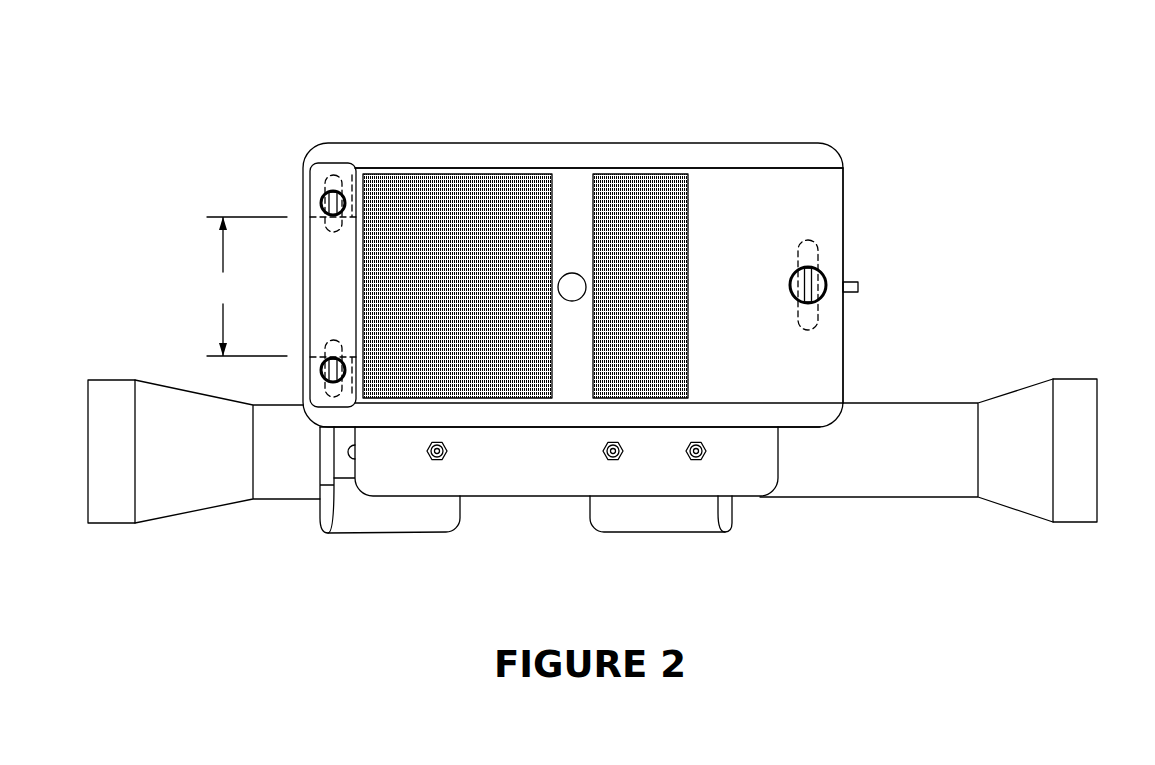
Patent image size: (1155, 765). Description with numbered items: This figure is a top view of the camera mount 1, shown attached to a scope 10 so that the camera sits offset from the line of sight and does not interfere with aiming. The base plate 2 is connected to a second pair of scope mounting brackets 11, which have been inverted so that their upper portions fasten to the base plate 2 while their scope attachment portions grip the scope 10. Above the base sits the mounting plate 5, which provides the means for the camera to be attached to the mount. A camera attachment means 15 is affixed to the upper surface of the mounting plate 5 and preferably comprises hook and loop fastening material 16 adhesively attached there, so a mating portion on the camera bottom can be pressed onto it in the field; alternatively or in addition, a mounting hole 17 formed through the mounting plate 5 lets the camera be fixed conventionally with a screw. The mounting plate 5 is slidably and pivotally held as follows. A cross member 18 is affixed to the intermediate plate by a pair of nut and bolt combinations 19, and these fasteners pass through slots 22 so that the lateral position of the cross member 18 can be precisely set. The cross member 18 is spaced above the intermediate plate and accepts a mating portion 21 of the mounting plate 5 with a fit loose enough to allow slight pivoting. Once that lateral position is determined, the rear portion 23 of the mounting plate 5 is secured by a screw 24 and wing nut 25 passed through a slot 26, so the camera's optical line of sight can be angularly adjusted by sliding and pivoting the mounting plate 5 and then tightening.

The camera mount 1 is at (177, 233).
The base plate 2 is at (748, 468).
The mounting plate 5 is at (820, 183).
The scope 10 is at (1065, 378).
The second pair of scope mounting brackets 11 is at (410, 515).
The camera attachment means 15 is at (652, 160).
The hook and loop fastening material 16 is at (653, 192).
The mounting hole 17 is at (572, 273).
The cross member 18 is at (307, 253).
The nut and bolt combinations 19 is at (331, 192).
The mating portion 21 is at (320, 240).
The slots 22 is at (330, 233).
The rear portion 23 is at (812, 384).
The screw 24 is at (812, 284).
The wing nut 25 is at (857, 290).
The slot 26 is at (818, 253).